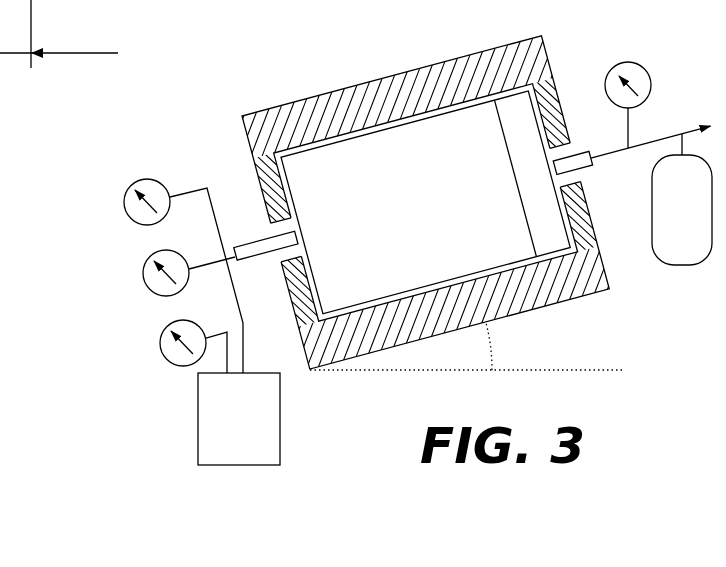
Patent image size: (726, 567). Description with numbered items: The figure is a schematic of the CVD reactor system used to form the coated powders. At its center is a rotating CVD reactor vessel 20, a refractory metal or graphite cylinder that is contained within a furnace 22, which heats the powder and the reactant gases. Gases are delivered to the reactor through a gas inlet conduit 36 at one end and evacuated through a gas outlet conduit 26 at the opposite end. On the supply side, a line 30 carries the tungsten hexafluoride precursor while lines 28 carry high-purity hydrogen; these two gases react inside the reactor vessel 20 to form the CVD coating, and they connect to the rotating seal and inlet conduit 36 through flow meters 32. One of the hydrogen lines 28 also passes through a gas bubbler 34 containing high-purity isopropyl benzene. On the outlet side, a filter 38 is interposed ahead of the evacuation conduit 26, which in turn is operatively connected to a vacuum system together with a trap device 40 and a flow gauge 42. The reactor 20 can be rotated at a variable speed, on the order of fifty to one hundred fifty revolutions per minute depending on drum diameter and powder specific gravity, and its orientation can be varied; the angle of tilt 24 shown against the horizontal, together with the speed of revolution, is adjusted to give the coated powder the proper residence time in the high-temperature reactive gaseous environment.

The rotating CVD reactor vessel 20 is at (497, 248).
The furnace 22 is at (548, 47).
The angle of tilt 24 is at (467, 346).
The gas outlet conduit 26 is at (658, 137).
The hydrogen supply line 28 is at (143, 279).
The tungsten hexafluoride supply line 30 is at (124, 206).
The flow meter 32 is at (162, 172).
The gas bubbler 34 is at (195, 393).
The gas inlet conduit 36 is at (253, 262).
The filter 38 is at (552, 238).
The trap device 40 is at (667, 203).
The flow gauge 42 is at (639, 60).